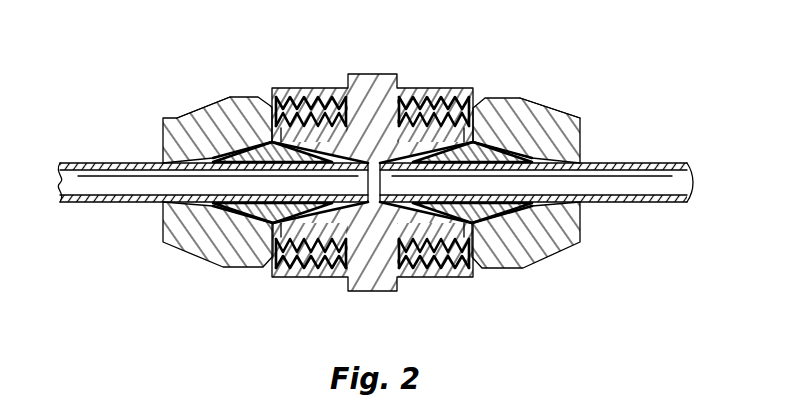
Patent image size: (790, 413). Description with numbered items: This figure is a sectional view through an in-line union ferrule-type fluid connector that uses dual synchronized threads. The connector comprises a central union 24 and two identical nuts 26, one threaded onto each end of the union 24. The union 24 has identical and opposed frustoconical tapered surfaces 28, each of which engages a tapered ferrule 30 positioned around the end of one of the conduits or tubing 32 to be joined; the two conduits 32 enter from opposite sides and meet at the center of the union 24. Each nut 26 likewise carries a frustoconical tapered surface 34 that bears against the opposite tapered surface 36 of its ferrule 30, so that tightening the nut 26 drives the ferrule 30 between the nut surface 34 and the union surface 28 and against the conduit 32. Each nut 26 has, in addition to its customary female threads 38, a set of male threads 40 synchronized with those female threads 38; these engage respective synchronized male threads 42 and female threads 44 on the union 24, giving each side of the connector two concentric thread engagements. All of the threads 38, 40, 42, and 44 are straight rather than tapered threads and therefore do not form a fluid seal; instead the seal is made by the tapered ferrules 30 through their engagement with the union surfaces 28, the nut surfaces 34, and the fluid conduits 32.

The union 24 is at (385, 270).
The nut 26 is at (163, 228).
The frustoconical tapered surface 28 is at (364, 161).
The tapered ferrule 30 is at (515, 156).
The conduit or tubing 32 is at (94, 163).
The frustoconical tapered surface 34 is at (228, 250).
The tapered surface 36 is at (230, 97).
The female threads 38 is at (422, 101).
The male threads 40 is at (450, 104).
The male threads 42 is at (290, 88).
The female threads 44 is at (323, 100).